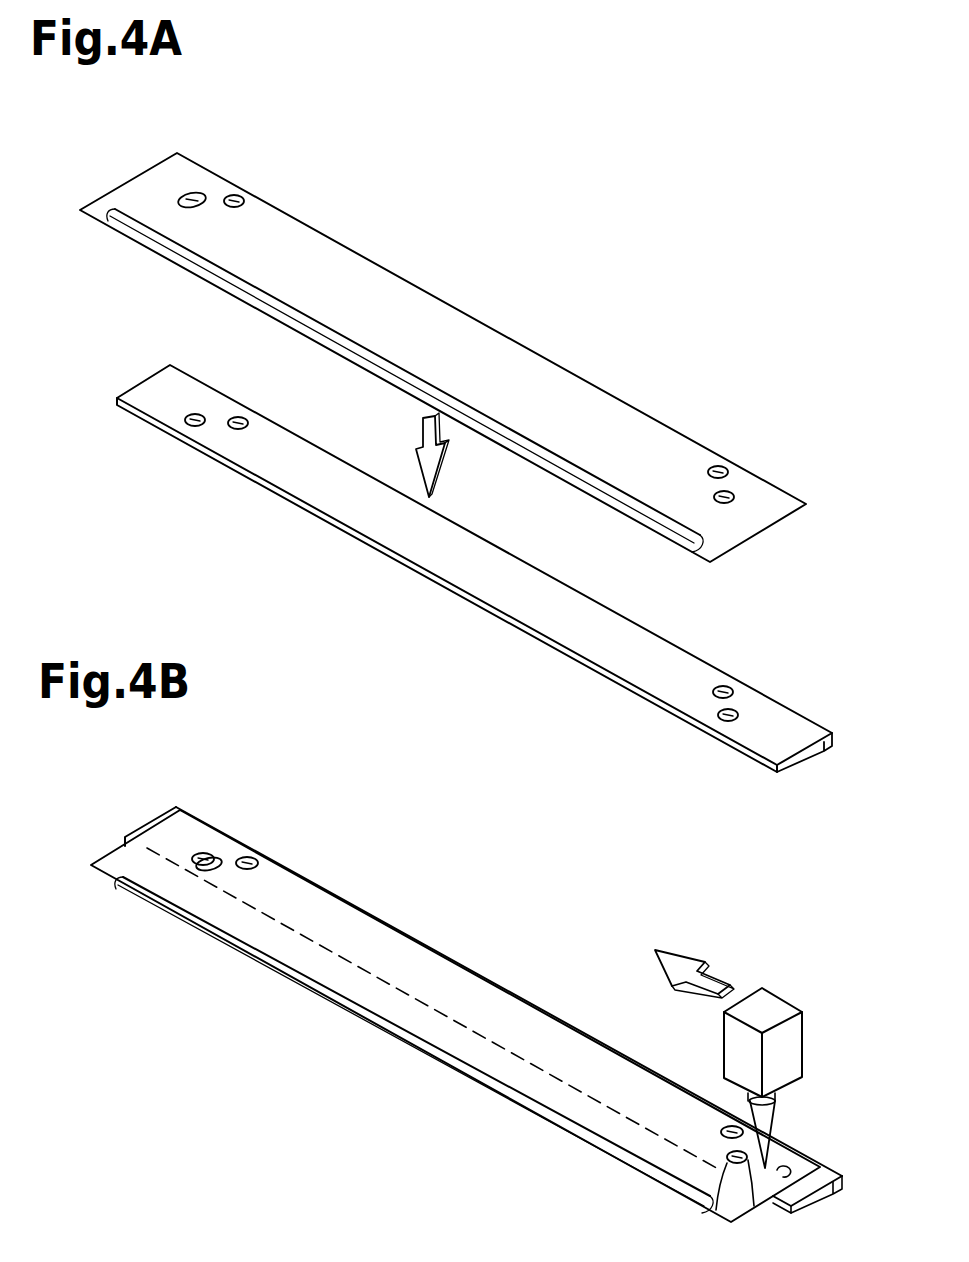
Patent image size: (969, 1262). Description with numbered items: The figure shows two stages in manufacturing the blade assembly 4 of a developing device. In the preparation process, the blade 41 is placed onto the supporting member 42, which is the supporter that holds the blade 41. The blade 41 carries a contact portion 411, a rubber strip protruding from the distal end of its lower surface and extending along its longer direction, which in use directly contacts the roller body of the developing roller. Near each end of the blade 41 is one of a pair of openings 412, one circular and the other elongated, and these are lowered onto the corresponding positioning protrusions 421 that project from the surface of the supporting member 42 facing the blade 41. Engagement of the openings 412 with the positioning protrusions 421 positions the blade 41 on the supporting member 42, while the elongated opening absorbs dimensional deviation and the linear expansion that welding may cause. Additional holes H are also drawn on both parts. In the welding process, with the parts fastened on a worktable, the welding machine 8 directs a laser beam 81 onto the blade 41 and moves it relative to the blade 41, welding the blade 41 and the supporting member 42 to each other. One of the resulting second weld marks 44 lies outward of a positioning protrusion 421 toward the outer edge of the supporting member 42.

In FIG. 4B, the blade assembly 4 is at (500, 976).
In FIG. 4A, the blade 41 is at (424, 296).
In FIG. 4B, the blade 41 is at (363, 922).
In FIG. 4A, the contact portion 411 is at (392, 376).
In FIG. 4B, the contact portion 411 is at (440, 1047).
In FIG. 4A, the openings 412 is at (194, 197).
In FIG. 4B, the openings 412 is at (211, 858).
In FIG. 4A, the supporting member 42 is at (436, 562).
In FIG. 4B, the supporting member 42 is at (150, 822).
In FIG. 4A, the positioning protrusion 421 is at (197, 415).
In FIG. 4B, the positioning protrusion 421 is at (203, 853).
In FIG. 4B, the second weld marks 44 is at (780, 1177).
In FIG. 4B, the welding machine 8 is at (772, 1002).
In FIG. 4B, the laser beam 81 is at (773, 1113).
In FIG. 4A, the hole H is at (235, 199).
In FIG. 4B, the hole H is at (252, 859).